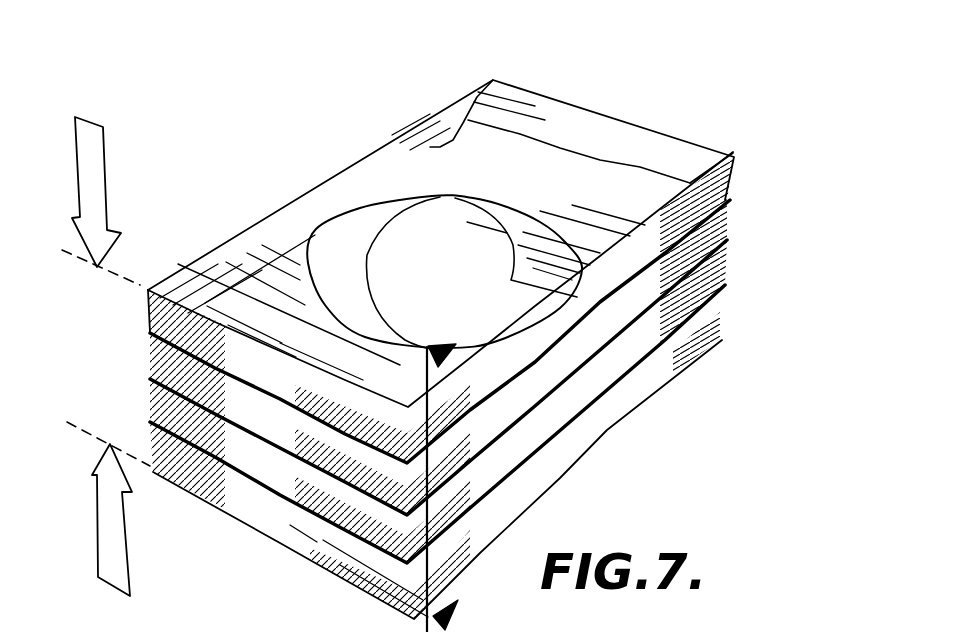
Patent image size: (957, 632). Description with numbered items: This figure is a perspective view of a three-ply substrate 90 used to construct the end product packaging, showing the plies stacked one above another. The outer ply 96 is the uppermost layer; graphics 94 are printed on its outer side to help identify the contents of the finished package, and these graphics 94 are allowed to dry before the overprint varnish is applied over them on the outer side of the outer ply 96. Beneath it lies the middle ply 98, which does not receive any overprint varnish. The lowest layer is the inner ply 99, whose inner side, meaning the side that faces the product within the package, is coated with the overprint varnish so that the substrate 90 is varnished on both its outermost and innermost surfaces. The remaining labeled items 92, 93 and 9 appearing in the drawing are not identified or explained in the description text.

The three-ply substrate 90 is at (280, 120).
The top bag 92 is at (570, 112).
The graphics 94 is at (352, 268).
The outer ply 96 is at (725, 196).
The middle ply 98 is at (727, 238).
The inner ply 99 is at (710, 295).
The bottom sheet 93 is at (603, 433).
The section line 9 is at (427, 372).